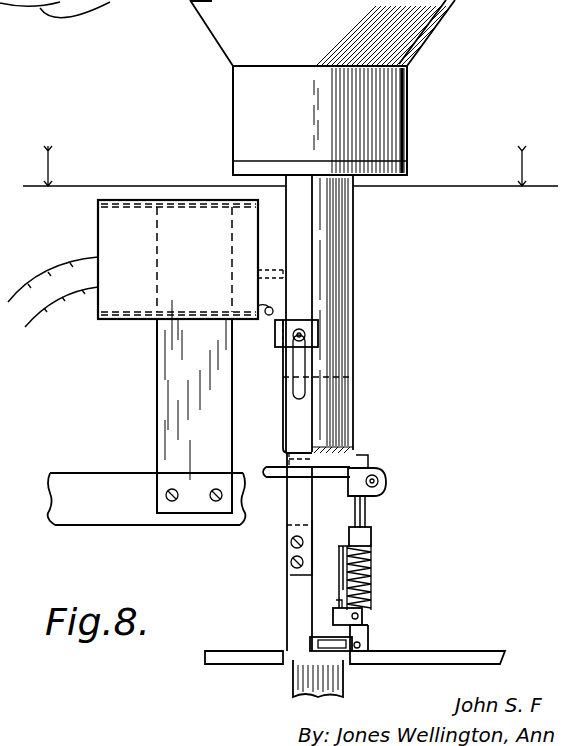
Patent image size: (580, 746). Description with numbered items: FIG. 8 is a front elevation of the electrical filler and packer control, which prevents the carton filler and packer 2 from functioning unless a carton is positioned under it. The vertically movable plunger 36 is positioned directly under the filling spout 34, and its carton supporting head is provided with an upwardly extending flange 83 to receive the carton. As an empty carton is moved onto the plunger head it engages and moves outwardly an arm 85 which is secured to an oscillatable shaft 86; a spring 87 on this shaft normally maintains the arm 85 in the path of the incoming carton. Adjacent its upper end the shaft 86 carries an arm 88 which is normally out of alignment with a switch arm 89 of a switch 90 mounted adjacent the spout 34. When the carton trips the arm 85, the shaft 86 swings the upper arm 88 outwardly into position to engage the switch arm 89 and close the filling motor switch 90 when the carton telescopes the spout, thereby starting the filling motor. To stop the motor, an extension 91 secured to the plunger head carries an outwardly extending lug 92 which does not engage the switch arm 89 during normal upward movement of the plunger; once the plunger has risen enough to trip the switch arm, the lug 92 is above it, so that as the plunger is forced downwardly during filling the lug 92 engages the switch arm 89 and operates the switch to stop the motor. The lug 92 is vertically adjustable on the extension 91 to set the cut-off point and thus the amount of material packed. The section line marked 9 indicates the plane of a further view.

The carton filler and packer 2 is at (443, 12).
The section line 9- 9 is at (290, 168).
The filling spout 34 is at (353, 268).
The plunger 36 is at (302, 683).
The upwardly extending flange 83 is at (308, 600).
The arm 85 is at (362, 638).
The oscillatable shaft 86 is at (365, 512).
The spring 87 is at (370, 578).
The arm 88 is at (338, 466).
The switch arm 89 is at (265, 308).
The switch 90 is at (178, 222).
The extension 91 is at (296, 415).
The lug 92 is at (281, 326).